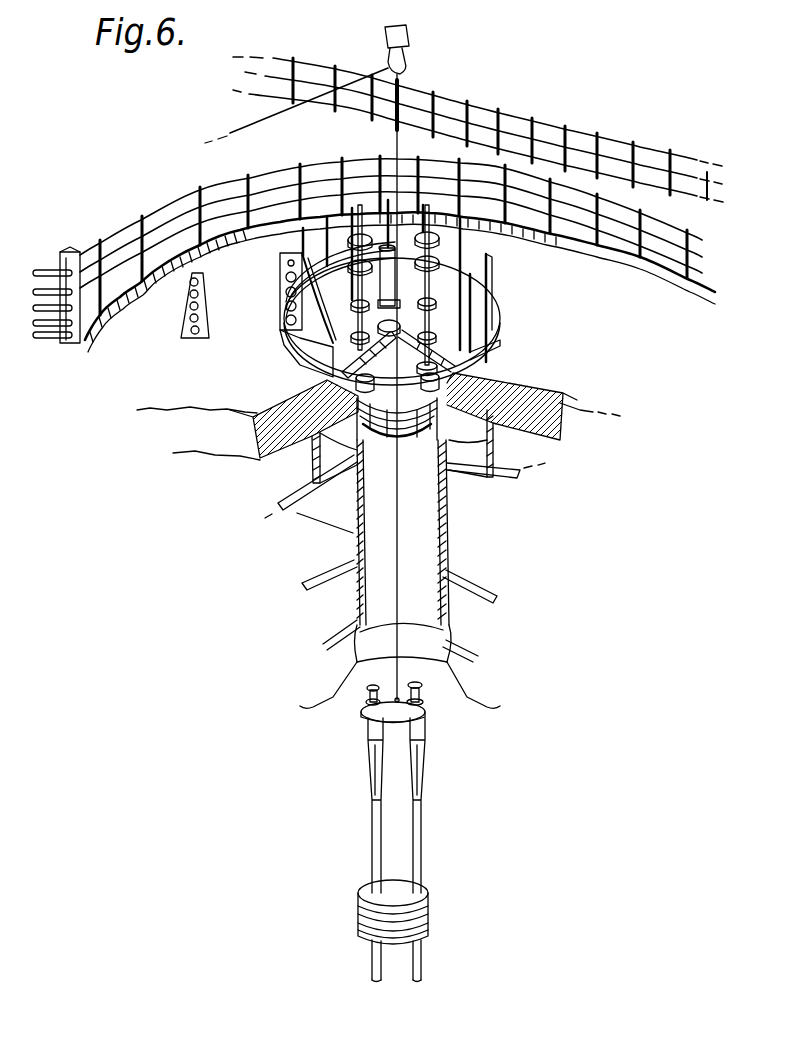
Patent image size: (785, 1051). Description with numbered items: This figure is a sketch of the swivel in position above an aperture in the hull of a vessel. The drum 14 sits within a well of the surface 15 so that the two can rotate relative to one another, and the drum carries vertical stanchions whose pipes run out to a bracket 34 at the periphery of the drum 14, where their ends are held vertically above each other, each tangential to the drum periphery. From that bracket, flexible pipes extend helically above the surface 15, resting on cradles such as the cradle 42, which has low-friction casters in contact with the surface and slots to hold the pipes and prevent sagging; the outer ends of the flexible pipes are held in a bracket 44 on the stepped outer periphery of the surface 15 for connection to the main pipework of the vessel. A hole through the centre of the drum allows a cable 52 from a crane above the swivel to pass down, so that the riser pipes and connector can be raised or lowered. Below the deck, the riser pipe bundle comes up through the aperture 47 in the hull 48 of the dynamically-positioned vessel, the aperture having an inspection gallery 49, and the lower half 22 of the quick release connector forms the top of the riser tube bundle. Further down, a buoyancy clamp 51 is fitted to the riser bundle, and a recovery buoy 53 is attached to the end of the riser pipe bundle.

The drum 14 is at (493, 338).
The surface 15 is at (586, 358).
The lower half of quick release connector 22 is at (427, 700).
The bracket 34 is at (280, 288).
The cradle 42 is at (190, 308).
The bracket 44 is at (58, 265).
The aperture 47 is at (353, 543).
The hull 48 is at (266, 592).
The inspection gallery 49 is at (403, 430).
The buoyancy clamp 51 is at (428, 916).
The cable 52 is at (397, 578).
The recovery buoy 53 is at (342, 377).